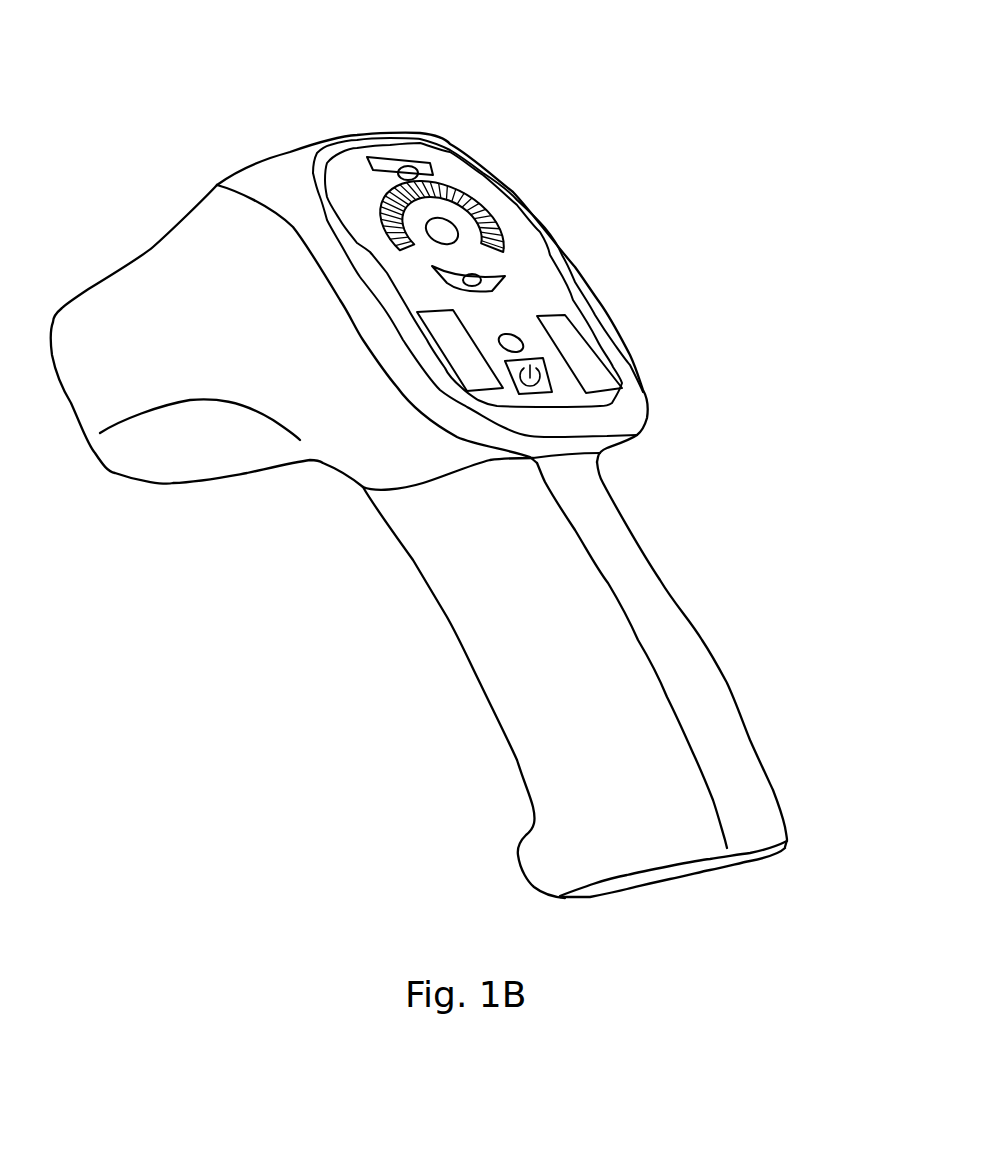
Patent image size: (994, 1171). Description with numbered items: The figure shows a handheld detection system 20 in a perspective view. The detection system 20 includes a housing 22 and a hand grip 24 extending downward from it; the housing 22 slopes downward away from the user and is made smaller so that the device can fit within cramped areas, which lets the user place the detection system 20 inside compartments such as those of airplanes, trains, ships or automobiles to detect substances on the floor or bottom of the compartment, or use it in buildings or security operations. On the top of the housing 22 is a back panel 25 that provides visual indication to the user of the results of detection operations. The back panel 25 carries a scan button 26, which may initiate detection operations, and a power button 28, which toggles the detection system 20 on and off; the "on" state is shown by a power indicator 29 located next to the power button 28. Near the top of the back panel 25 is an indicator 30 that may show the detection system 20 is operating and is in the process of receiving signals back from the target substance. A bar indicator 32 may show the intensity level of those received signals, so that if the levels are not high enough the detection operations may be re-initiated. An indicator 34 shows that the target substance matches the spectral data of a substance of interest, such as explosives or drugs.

The detection system 20 is at (455, 449).
The housing 22 is at (183, 220).
The hand grip 24 is at (730, 683).
The back panel 25 is at (533, 287).
The scan button 26 is at (580, 340).
The power button 28 is at (641, 393).
The power indicator 29 is at (527, 347).
The indicator 30 is at (410, 157).
The bar indicator 32 is at (455, 205).
The indicator 34 is at (487, 213).